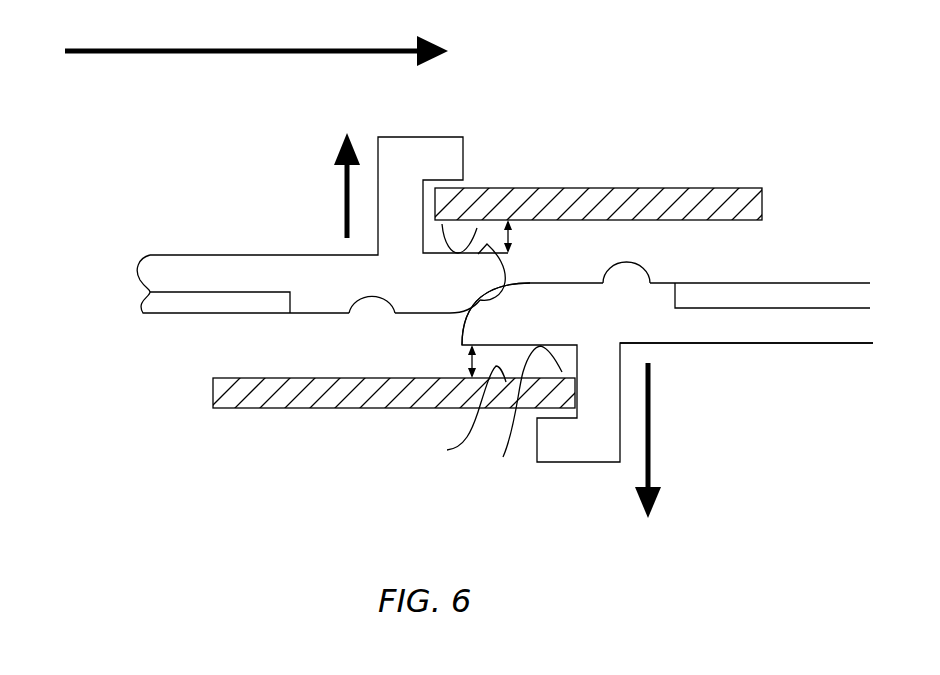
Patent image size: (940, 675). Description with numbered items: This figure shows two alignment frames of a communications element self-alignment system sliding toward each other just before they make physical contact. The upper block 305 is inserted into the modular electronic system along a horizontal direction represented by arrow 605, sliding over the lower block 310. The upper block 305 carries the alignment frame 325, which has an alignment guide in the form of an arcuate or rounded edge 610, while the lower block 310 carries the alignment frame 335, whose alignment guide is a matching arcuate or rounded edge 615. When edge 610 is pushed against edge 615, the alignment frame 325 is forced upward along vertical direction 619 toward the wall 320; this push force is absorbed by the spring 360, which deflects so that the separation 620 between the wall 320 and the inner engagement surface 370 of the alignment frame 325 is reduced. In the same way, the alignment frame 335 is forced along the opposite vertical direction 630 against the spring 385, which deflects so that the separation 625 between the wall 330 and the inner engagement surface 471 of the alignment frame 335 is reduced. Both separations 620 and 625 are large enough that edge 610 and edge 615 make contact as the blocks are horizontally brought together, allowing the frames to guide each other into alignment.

The arrow 605 is at (260, 51).
The block 305 is at (144, 202).
The vertical direction 619 is at (343, 180).
The alignment frame 325 is at (294, 248).
The spring 360 is at (477, 228).
The wall 320 is at (600, 188).
The separation 620 is at (515, 233).
The inner engagement surface 370 is at (503, 275).
The arcuate or rounded edge 610 is at (480, 298).
The arcuate or rounded edge 615 is at (527, 296).
The separation 625 is at (469, 361).
The wall 330 is at (213, 388).
The inner engagement surface 471 is at (448, 414).
The spring 385 is at (525, 419).
The vertical direction 630 is at (652, 407).
The alignment frame 335 is at (811, 352).
The block 310 is at (819, 428).